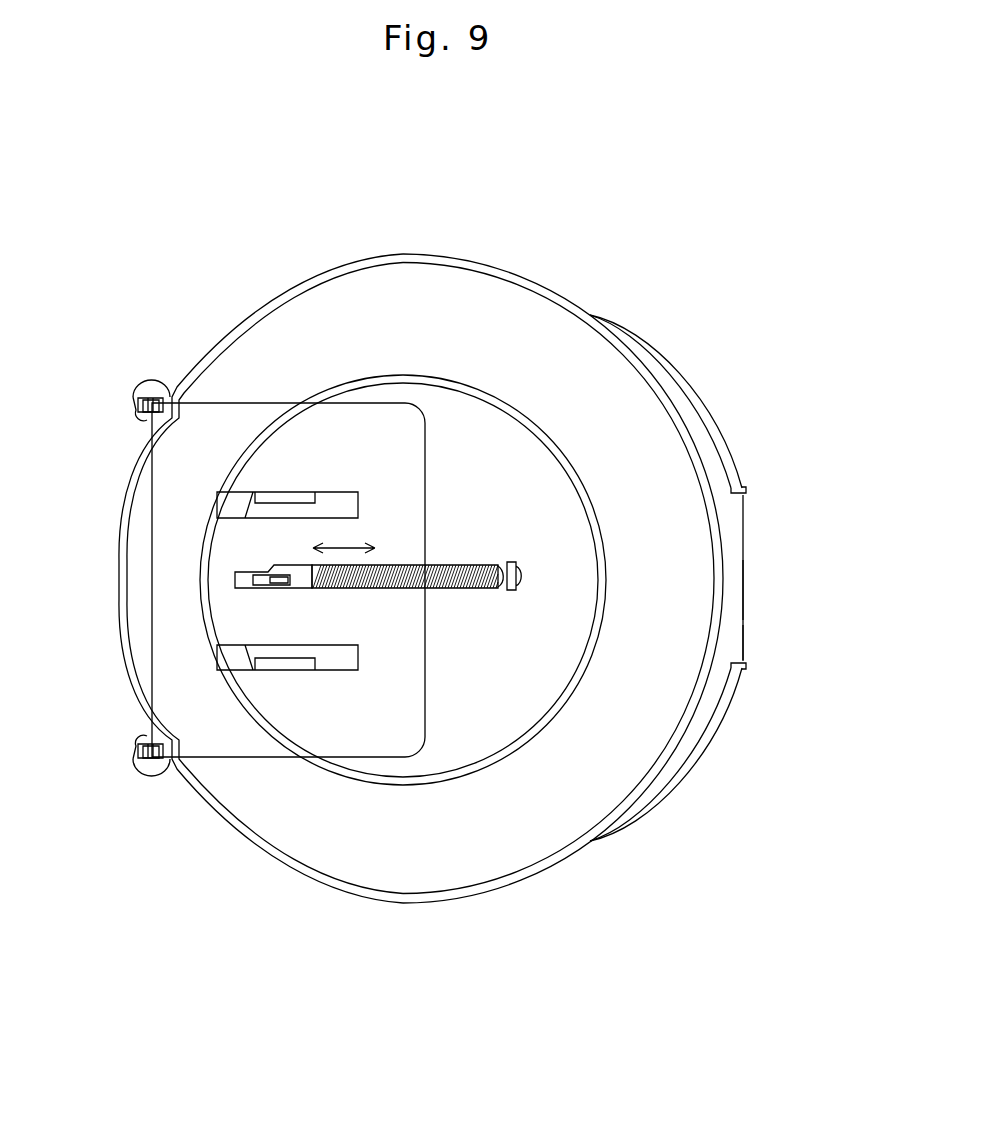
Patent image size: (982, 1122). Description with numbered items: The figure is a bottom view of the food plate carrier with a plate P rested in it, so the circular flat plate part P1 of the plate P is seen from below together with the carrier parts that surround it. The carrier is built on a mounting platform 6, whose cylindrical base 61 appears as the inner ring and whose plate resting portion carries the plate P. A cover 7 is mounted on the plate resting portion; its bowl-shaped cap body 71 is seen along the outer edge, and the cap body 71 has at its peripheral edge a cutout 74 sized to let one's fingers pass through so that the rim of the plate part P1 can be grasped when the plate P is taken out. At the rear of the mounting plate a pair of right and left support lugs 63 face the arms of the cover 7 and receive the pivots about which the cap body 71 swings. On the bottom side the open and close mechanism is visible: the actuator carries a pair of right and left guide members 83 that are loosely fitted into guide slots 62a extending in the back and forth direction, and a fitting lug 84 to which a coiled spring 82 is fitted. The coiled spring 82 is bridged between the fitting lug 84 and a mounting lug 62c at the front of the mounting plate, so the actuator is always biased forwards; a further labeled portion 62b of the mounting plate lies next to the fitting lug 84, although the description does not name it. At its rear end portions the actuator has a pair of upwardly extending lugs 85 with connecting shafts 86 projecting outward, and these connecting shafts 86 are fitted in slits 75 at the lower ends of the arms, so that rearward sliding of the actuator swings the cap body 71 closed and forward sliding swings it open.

The mounting platform 6 is at (505, 256).
The cylindrical base 61 is at (473, 385).
The cover 7 is at (722, 560).
The cap body 71 is at (659, 355).
The cutout 74 is at (737, 495).
The plate P is at (757, 618).
The flat plate part P1 is at (739, 643).
The guide members 83 is at (278, 492).
The guide slots 62a is at (330, 500).
The engaging portion 62b is at (237, 580).
The mounting lug 62c is at (517, 590).
The coiled spring 82 is at (383, 588).
The fitting lug 84 is at (255, 573).
The support lugs 63 is at (155, 378).
The connecting shafts 86 is at (143, 381).
The slits 75 is at (138, 405).
The lugs 85 is at (142, 420).